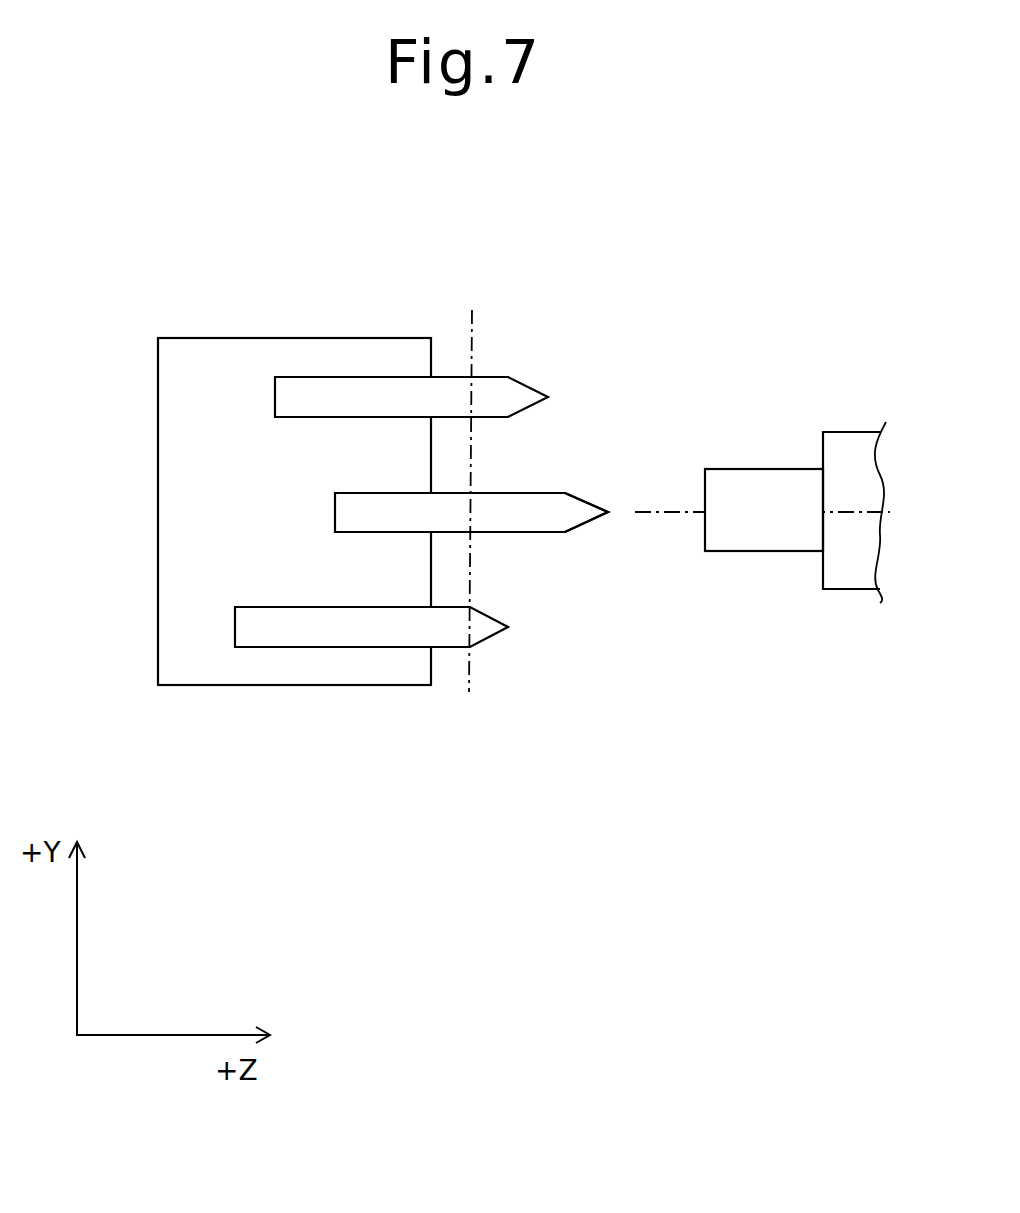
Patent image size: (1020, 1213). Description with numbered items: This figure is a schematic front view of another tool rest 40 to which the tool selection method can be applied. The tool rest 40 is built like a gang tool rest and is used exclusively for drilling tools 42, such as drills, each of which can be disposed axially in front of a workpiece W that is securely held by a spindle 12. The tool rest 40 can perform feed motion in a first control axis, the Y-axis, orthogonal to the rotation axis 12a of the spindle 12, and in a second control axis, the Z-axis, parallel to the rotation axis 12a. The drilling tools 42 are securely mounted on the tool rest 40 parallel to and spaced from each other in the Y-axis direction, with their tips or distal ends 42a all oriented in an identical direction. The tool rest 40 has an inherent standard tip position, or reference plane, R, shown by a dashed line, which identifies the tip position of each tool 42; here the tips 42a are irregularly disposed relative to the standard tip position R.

The tool rest 40 is at (215, 332).
The drilling tools 42 is at (358, 392).
The tips (distal ends) 42a is at (607, 512).
The standard tip position (reference plane) R is at (471, 481).
The rotation axis 12a is at (672, 512).
The spindle 12 is at (840, 432).
The workpiece W is at (735, 551).